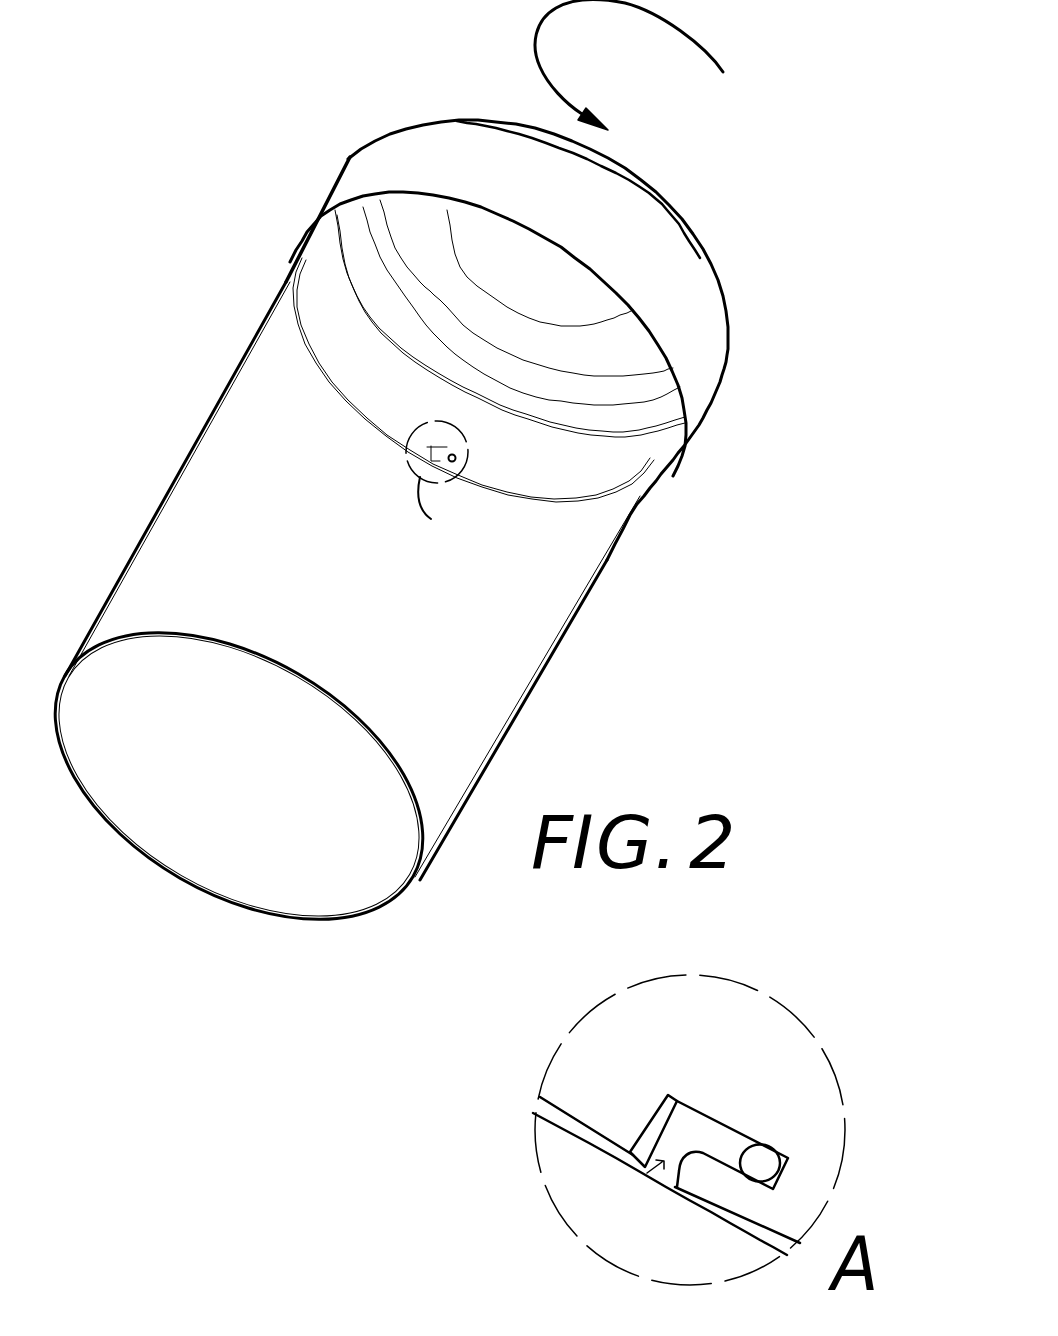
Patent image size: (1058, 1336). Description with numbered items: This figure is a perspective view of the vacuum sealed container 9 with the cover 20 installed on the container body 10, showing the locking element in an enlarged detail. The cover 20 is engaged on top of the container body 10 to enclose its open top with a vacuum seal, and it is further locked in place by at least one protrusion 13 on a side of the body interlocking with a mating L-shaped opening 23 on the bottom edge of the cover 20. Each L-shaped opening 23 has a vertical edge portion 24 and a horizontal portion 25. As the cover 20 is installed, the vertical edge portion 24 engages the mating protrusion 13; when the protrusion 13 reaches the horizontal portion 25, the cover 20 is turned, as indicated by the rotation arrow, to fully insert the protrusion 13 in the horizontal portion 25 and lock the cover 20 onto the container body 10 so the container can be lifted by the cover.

The vacuum sealed container 9 is at (252, 280).
The container body 10 is at (228, 383).
The cover 20 is at (332, 181).
The vertical edge portion 24 is at (653, 1130).
The horizontal portion 25 is at (712, 1113).
The protrusion 13 is at (765, 1152).
The L-shaped opening 23 is at (647, 1174).